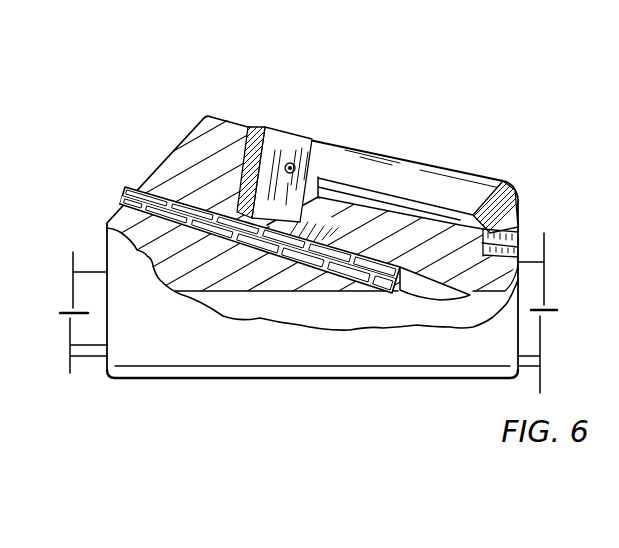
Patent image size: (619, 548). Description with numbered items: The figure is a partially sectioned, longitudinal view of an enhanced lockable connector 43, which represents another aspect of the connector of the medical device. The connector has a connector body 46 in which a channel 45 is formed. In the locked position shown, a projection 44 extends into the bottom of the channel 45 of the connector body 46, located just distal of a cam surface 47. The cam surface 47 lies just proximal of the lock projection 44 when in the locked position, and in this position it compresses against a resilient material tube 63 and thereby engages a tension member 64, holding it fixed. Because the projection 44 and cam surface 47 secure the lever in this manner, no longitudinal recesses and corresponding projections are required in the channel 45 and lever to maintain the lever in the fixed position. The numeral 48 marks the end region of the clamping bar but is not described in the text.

The enhanced lockable connector 43 is at (368, 83).
The projection 44 is at (258, 232).
The channel 45 is at (265, 128).
The connector body 46 is at (397, 381).
The cam surface 47 is at (322, 167).
The clamp bar end 48 is at (478, 177).
The resilient material tube 63 is at (183, 200).
The tension member 64 is at (127, 192).